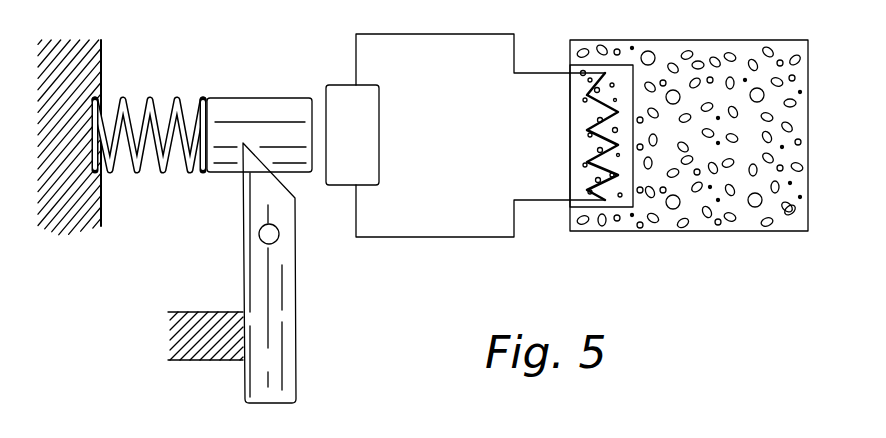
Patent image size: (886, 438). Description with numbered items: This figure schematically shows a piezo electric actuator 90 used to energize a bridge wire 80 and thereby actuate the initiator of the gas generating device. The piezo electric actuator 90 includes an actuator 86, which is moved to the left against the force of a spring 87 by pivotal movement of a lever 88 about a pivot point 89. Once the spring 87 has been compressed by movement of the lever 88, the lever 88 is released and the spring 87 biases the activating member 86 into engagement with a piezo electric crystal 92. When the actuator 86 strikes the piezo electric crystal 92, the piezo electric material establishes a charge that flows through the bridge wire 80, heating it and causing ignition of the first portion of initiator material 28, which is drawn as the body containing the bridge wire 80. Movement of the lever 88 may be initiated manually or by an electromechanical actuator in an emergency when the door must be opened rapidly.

The first portion of initiator material 28 is at (722, 135).
The bridge wire 80 is at (580, 136).
The actuator 86 is at (248, 108).
The spring 87 is at (157, 98).
The lever 88 is at (297, 338).
The pivot point 89 is at (260, 237).
The piezo electric actuator 90 is at (166, 237).
The piezo electric crystal 92 is at (370, 115).